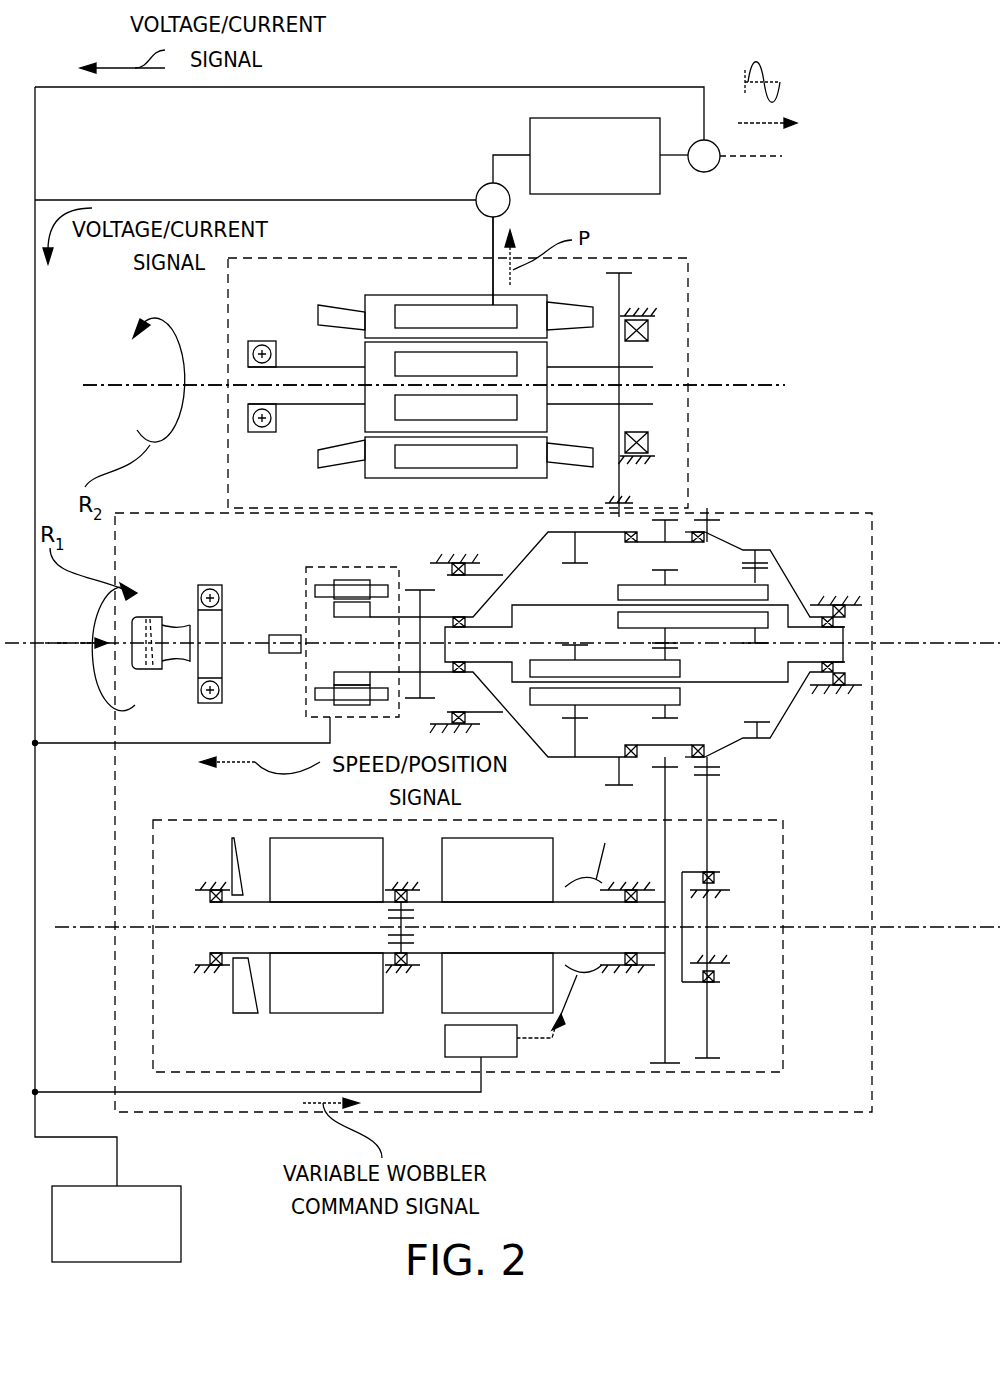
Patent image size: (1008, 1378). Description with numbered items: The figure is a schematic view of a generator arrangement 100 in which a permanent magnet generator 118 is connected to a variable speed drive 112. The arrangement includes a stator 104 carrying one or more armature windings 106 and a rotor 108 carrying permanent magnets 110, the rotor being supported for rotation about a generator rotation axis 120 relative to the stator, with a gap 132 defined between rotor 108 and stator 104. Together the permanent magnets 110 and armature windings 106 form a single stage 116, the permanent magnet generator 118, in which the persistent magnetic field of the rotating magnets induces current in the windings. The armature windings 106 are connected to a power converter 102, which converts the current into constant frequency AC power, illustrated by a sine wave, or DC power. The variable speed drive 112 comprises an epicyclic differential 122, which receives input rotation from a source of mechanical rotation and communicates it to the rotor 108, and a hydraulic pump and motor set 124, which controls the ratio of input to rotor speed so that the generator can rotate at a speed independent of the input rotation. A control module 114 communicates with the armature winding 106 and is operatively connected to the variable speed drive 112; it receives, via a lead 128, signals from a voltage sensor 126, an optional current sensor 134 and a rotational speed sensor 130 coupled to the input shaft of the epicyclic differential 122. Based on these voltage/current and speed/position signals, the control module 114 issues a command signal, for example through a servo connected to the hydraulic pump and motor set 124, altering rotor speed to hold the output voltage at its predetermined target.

The generator arrangement 100 is at (694, 1249).
The power converter 102 is at (605, 118).
The stator 104 is at (460, 339).
The armature winding 106 is at (520, 318).
The rotor 108 is at (547, 413).
The permanent magnets 110 is at (520, 408).
The variable speed drive 112 is at (787, 513).
The control module 114 is at (155, 1186).
The single stage 116 is at (318, 285).
The permanent magnet generator 118 is at (375, 258).
The generator rotation axis 120 is at (755, 386).
The epicyclic differential 122 is at (832, 553).
The hydraulic pump and motor set 124 is at (618, 1075).
The voltage sensor 126 is at (484, 189).
The lead 128 is at (487, 271).
The rotational speed sensor 130 is at (306, 600).
The gap 132 is at (375, 432).
The current sensor 134 is at (710, 165).